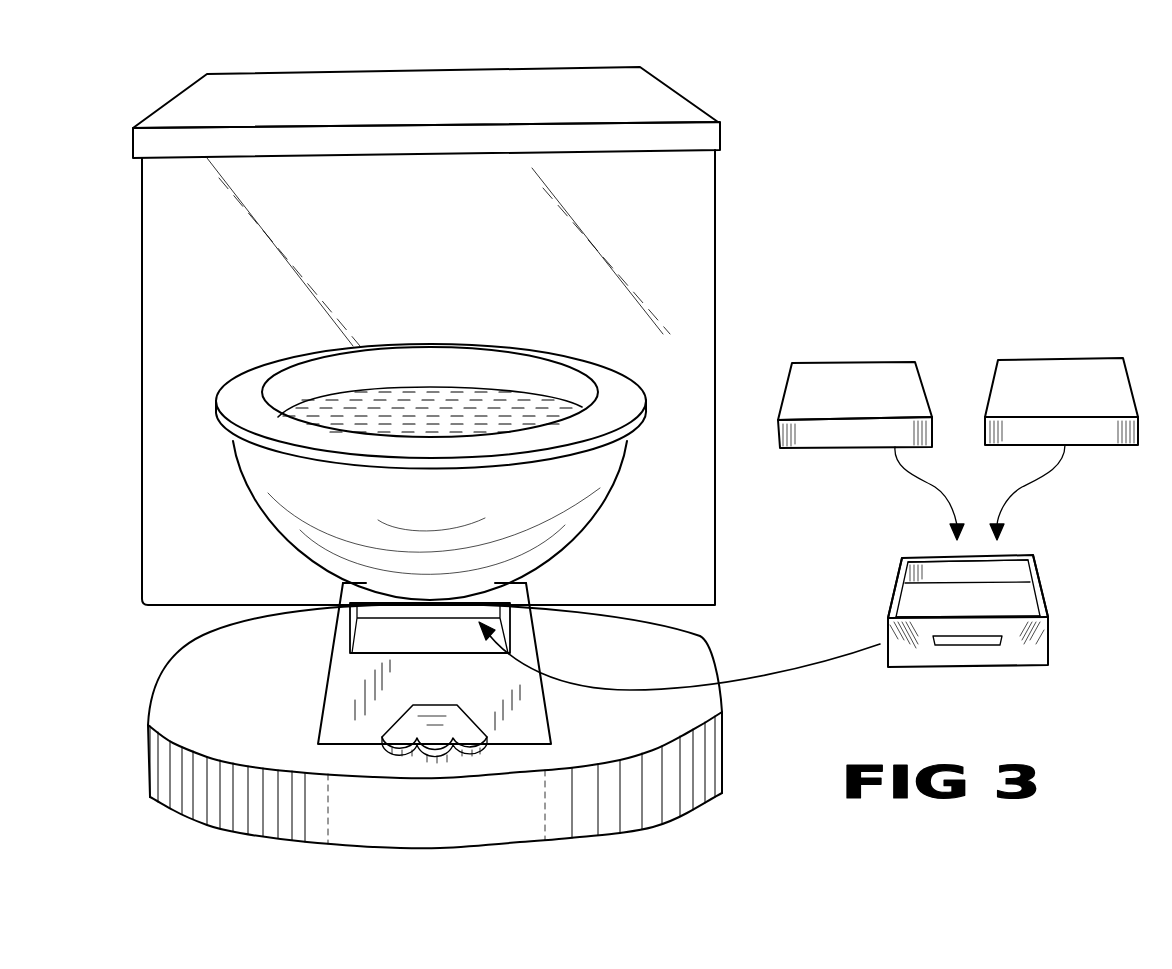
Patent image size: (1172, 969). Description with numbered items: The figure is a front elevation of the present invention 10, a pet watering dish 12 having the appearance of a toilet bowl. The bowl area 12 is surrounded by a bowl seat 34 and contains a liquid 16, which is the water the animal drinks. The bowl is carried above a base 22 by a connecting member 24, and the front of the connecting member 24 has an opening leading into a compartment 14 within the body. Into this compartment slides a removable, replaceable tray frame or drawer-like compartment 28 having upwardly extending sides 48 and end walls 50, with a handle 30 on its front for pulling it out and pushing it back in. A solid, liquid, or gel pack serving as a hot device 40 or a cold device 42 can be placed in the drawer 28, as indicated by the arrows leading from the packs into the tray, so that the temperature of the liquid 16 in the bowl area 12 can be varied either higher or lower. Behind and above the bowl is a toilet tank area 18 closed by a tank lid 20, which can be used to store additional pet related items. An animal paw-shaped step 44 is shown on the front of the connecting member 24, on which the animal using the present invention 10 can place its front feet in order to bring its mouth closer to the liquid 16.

The present invention 10 is at (840, 252).
The dish or bowl 12 is at (590, 474).
The compartment 14 is at (355, 621).
The water 16 is at (348, 405).
The tank 18 is at (697, 192).
The tank lid 20 is at (657, 97).
The base 22 is at (677, 705).
The connecting member 24 is at (522, 635).
The drawer 28 is at (964, 619).
The handle 30 is at (953, 642).
The bowl seat 34 is at (613, 387).
The hot device 40 is at (893, 373).
The cold device 42 is at (1072, 368).
The step 44 is at (427, 716).
The tray sides 48 is at (893, 590).
The tray walls 50 is at (940, 557).